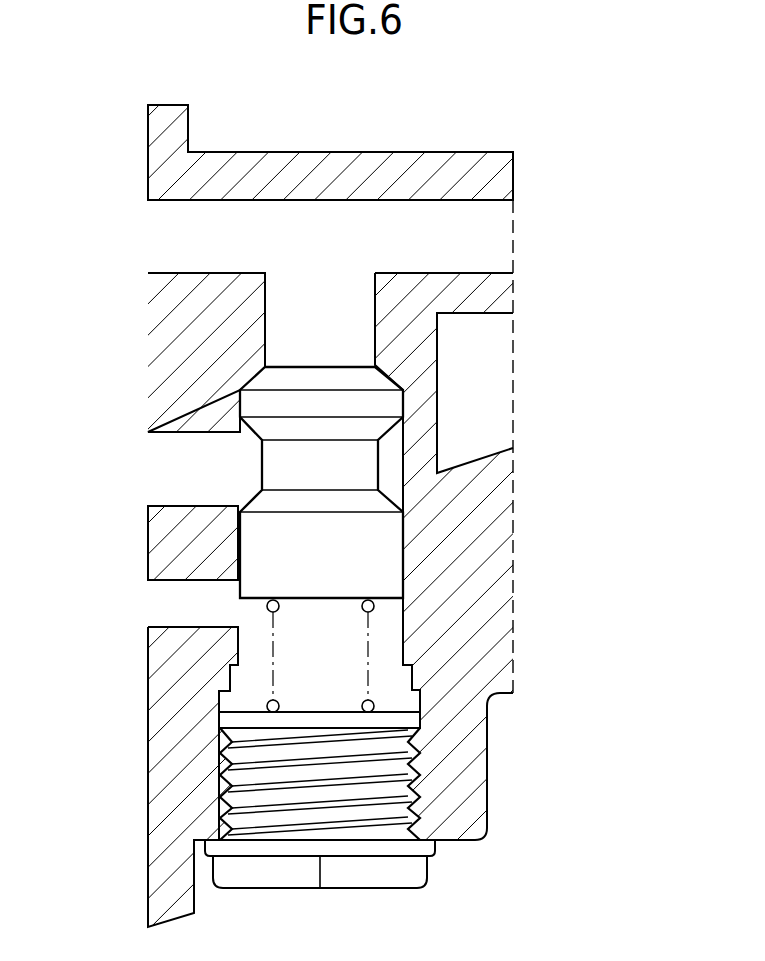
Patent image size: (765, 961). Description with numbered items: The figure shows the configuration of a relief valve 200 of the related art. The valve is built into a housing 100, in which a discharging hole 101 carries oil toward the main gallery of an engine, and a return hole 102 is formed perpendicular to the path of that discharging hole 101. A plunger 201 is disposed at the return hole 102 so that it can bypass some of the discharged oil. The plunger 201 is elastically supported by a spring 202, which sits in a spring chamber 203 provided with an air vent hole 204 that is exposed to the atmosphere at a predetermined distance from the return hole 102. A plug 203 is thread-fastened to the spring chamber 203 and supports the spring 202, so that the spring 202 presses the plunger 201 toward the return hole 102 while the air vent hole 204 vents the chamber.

The housing 100 is at (155, 133).
The discharging hole 101 is at (193, 244).
The return hole 102 is at (193, 470).
The relief valve 200 is at (622, 463).
The plunger 201 is at (355, 462).
The spring 202 is at (370, 656).
The spring chamber / plug 203 is at (248, 688).
The air vent hole 204 is at (193, 607).